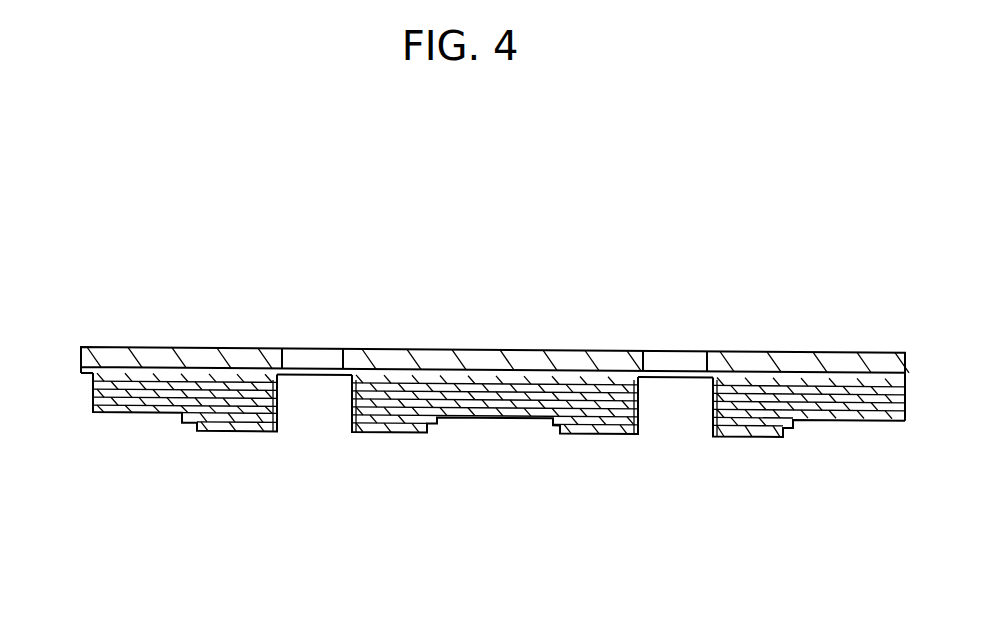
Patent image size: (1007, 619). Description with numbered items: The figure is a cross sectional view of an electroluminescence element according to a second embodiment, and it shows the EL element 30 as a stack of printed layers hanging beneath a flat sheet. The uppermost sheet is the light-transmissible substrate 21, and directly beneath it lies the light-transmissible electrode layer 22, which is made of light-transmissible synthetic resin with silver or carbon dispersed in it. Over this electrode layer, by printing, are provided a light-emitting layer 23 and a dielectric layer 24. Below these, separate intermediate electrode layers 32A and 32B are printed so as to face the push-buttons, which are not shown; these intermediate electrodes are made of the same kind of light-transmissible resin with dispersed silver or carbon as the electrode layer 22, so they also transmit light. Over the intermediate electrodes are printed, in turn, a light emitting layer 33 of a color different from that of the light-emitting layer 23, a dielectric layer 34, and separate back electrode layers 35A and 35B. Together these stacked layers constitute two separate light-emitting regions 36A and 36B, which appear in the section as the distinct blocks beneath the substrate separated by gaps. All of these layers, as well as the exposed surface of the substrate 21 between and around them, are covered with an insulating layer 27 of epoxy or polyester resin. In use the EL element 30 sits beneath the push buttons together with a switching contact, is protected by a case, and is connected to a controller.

The light-transmissible substrate 21 is at (144, 352).
The light-transmissible electrode layer 22 is at (92, 412).
The light-emitting layer 23 is at (125, 405).
The dielectric layer 24 is at (175, 405).
The insulating layer 27 is at (368, 430).
The EL element 30 is at (562, 256).
The intermediate electrode layer 32A is at (227, 427).
The intermediate electrode layer 32B is at (582, 420).
The light emitting layer 33 is at (452, 418).
The dielectric layer 34 is at (513, 417).
The back electrode layer 35A is at (253, 427).
The back electrode layer 35B is at (610, 433).
The light-emitting region 36A is at (373, 345).
The light-emitting region 36B is at (743, 349).